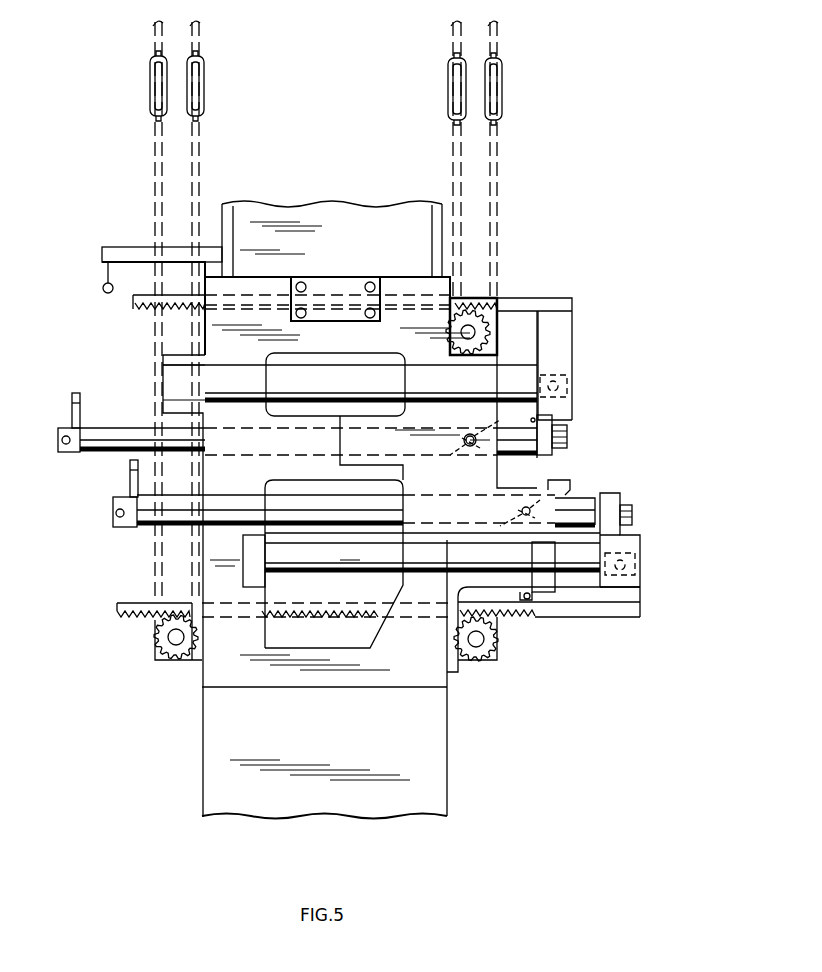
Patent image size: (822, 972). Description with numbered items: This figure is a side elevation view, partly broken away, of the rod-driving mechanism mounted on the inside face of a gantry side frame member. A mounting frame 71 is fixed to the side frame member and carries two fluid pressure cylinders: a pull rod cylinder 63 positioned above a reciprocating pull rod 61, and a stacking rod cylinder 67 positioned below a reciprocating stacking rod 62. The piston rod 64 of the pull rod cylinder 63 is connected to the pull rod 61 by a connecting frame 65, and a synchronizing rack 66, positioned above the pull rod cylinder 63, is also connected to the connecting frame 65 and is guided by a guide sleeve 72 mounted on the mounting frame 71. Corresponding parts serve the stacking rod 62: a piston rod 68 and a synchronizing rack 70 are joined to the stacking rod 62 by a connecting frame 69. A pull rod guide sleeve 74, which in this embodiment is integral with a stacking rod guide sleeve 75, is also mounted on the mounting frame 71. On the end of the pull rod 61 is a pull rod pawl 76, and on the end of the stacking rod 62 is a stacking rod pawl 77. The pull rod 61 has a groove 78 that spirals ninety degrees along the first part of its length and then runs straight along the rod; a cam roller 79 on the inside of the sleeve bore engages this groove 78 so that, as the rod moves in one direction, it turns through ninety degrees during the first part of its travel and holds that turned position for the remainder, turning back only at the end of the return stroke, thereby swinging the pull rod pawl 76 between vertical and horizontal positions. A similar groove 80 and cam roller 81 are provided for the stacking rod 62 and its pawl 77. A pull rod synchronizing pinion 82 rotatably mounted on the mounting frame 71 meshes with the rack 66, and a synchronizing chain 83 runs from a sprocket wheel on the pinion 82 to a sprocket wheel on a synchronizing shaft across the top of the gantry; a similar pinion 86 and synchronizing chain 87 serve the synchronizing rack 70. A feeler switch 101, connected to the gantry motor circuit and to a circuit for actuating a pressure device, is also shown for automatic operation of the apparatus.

The pull rod 61 is at (95, 453).
The stacking rod 62 is at (175, 527).
The pull rod cylinder 63 is at (205, 380).
The piston rod 64 is at (520, 390).
The connecting frame 65 is at (556, 347).
The synchronizing rack 66 is at (516, 300).
The stacking rod cylinder 67 is at (512, 565).
The piston rod 68 is at (588, 570).
The connecting frame 69 is at (635, 569).
The synchronizing rack 70 is at (565, 610).
The mounting frame 71 is at (440, 283).
The guide sleeve 72 is at (338, 280).
The pull rod guide sleeve 74 is at (537, 441).
The stacking rod guide sleeve 75 is at (550, 508).
The pull rod pawl 76 is at (72, 410).
The stacking rod pawl 77 is at (130, 480).
The groove 78 is at (469, 447).
The cam roller 79 is at (478, 431).
The groove 80 is at (520, 520).
The cam roller 81 is at (531, 493).
The pull rod synchronizing pinion 82 is at (484, 340).
The synchronizing chain 83 is at (497, 168).
The pinion 86 is at (481, 666).
The synchronizing chain 87 is at (156, 176).
The feeler switch 101 is at (103, 292).